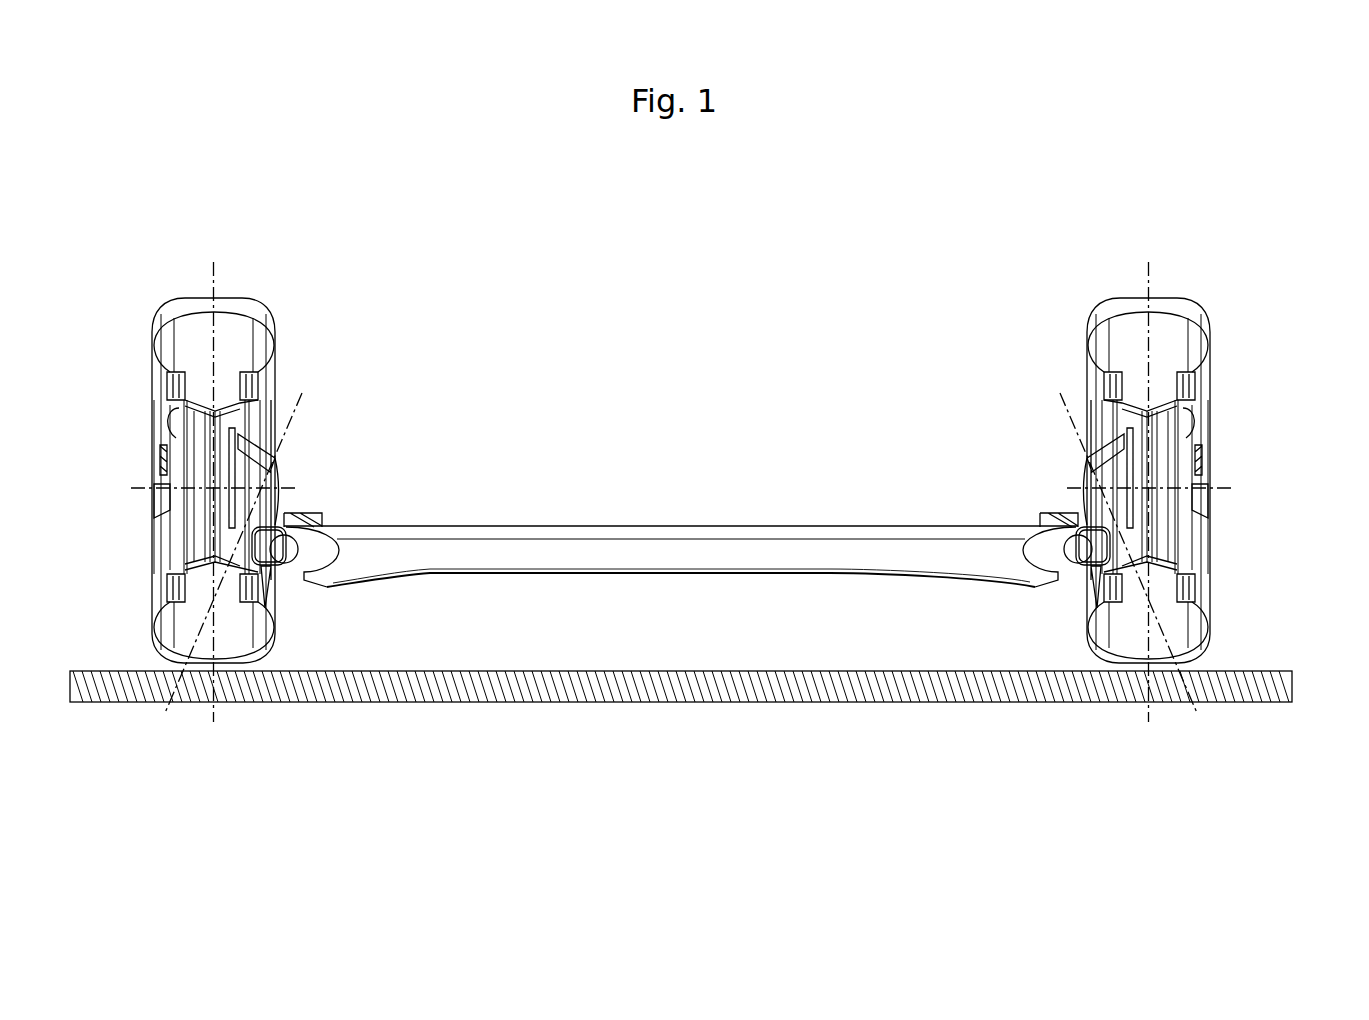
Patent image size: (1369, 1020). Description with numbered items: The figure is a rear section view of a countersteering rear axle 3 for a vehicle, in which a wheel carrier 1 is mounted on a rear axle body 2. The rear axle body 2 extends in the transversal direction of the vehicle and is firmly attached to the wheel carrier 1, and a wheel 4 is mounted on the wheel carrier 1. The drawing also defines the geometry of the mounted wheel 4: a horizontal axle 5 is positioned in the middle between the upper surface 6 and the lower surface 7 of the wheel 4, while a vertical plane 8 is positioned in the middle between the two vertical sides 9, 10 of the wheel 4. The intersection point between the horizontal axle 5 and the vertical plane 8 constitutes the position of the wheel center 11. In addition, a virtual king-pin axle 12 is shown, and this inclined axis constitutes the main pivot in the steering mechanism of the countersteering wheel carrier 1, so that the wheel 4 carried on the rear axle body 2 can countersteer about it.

The wheel carrier 1 is at (1023, 470).
The rear axle body 2 is at (710, 535).
The countersteering rear axle 3 is at (826, 167).
The wheel 4 is at (1195, 290).
The horizontal axle 5 is at (1239, 477).
The upper surface 6 is at (1133, 298).
The lower surface 7 is at (1137, 673).
The vertical plane 8 is at (1152, 256).
The vertical side 9 is at (1197, 388).
The vertical side 10 is at (1085, 370).
The wheel center 11 is at (1160, 477).
The virtual king-pin axle 12 is at (1062, 396).